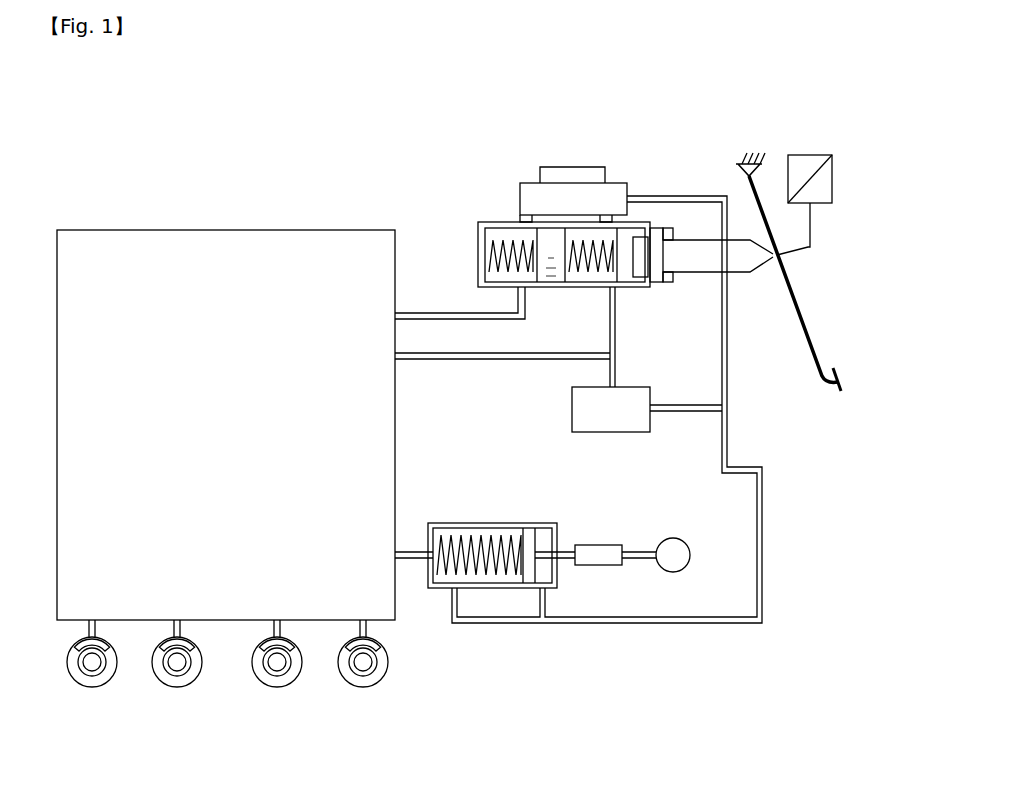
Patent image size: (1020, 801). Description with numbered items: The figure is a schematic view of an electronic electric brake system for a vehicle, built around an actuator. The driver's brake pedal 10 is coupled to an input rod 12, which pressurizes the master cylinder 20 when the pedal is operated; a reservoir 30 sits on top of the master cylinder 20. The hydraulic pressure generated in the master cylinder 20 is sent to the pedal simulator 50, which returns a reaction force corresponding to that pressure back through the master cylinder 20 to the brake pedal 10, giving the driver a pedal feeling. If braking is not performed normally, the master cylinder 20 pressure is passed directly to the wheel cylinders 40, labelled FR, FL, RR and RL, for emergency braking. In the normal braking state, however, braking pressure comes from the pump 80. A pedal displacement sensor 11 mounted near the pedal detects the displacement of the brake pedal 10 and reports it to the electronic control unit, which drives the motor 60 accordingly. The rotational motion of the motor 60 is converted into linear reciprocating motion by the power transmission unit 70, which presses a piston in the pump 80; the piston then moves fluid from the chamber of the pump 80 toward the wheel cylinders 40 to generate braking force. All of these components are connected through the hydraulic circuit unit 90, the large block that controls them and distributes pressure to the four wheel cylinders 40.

The brake pedal 10 is at (803, 313).
The pedal displacement sensor 11 is at (822, 155).
The input rod 12 is at (708, 272).
The master cylinder 20 is at (490, 222).
The reservoir 30 is at (616, 183).
The wheel cylinders 40 is at (160, 678).
The pedal simulator 50 is at (640, 387).
The motor 60 is at (681, 540).
The power transmission unit 70 is at (612, 545).
The pump 80 is at (484, 523).
The hydraulic circuit unit 90 is at (122, 230).